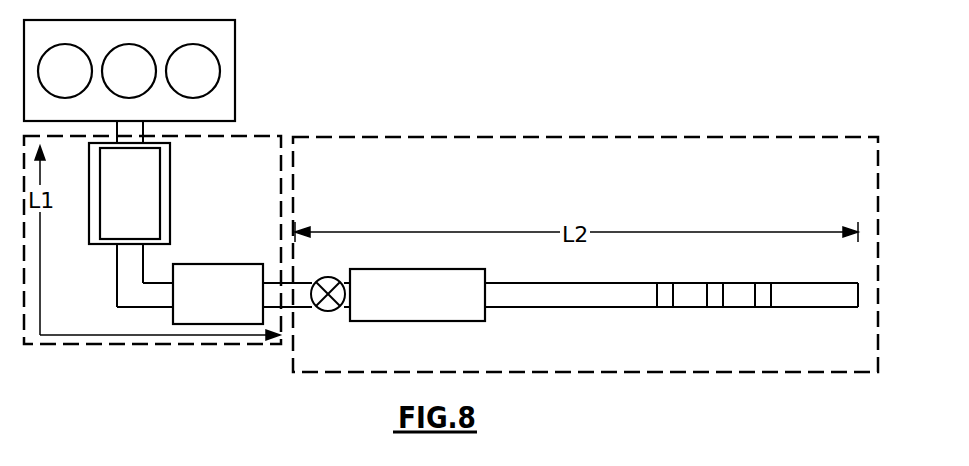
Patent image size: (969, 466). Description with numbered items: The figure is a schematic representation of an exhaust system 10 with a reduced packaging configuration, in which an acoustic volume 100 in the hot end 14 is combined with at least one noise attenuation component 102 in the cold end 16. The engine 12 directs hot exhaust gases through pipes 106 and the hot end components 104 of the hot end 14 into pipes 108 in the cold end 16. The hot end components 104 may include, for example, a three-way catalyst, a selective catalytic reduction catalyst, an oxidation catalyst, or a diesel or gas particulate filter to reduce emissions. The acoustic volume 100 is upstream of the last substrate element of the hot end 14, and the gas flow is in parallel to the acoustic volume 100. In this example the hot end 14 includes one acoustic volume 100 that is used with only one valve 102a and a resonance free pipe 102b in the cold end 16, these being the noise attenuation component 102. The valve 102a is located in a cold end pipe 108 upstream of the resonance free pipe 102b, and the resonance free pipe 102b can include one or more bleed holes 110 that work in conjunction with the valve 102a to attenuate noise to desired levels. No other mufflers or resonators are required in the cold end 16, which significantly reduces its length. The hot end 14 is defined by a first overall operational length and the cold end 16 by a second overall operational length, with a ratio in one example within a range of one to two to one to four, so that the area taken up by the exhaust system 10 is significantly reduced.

The exhaust system 10 is at (834, 49).
The engine 12 is at (228, 35).
The hot end 14 is at (274, 136).
The cold end 16 is at (535, 137).
The acoustic volume 100 is at (94, 240).
The noise attenuation component 102 is at (340, 265).
The valve 102a is at (328, 311).
The resonance free pipe 102b is at (783, 307).
The hot end components 104 is at (143, 205).
The pipes 106 is at (133, 132).
The pipes 108 is at (305, 298).
The bleed holes 110 is at (762, 290).